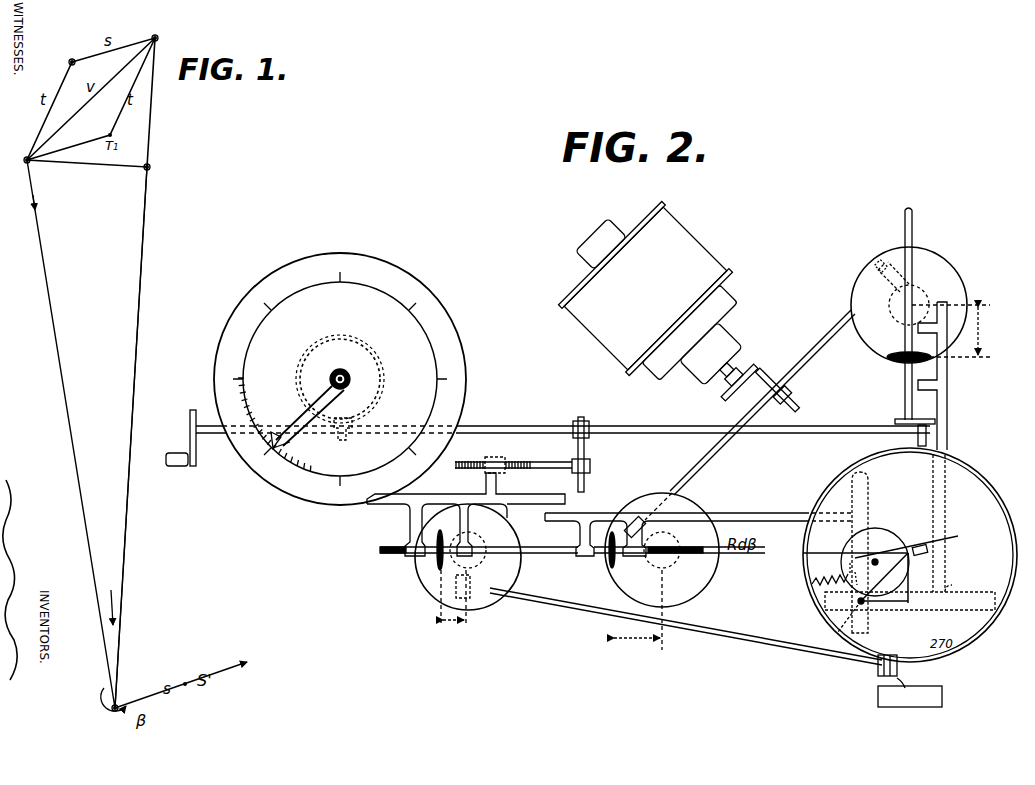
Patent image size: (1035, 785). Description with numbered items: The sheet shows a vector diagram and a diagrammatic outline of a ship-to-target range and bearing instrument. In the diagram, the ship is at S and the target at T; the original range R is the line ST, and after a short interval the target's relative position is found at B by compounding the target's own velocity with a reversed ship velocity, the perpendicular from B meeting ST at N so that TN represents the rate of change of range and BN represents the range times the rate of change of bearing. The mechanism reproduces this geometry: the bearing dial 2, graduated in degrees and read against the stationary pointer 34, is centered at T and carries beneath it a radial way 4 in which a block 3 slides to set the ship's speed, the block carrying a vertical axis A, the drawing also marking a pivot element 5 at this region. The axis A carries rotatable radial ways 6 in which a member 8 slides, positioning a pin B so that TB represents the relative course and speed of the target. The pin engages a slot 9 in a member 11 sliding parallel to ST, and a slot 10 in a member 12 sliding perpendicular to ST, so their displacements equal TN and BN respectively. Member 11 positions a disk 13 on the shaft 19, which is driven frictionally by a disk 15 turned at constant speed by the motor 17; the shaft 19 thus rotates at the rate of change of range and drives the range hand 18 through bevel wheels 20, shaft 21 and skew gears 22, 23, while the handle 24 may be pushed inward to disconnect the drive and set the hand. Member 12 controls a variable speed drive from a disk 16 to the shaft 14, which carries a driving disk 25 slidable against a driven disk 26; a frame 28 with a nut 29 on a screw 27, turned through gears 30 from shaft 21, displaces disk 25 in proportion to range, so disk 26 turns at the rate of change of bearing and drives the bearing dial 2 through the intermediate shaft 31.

In FIG. 2, the bearing dial 2 is at (1012, 568).
In FIG. 2, the sliding block 3 is at (875, 557).
In FIG. 2, the radial way 4 is at (930, 548).
In FIG. 2, the pivot pin 5 is at (878, 558).
In FIG. 2, the radial ways 6 is at (815, 612).
In FIG. 2, the sliding member 8 is at (908, 557).
In FIG. 2, the slot 9 is at (962, 612).
In FIG. 2, the slot 10 is at (868, 490).
In FIG. 2, the sliding member 11 is at (940, 412).
In FIG. 2, the sliding member 12 is at (740, 520).
In FIG. 2, the disk 13 is at (900, 352).
In FIG. 2, the shaft 14 is at (398, 542).
In FIG. 2, the disk 15 is at (955, 280).
In FIG. 2, the disk 16 is at (705, 575).
In FIG. 2, the motor 17 is at (666, 309).
In FIG. 2, the range hand 18 is at (290, 439).
In FIG. 2, the shaft 19 is at (905, 405).
In FIG. 2, the bevel wheels 20 is at (926, 428).
In FIG. 2, the shaft 21 is at (771, 434).
In FIG. 2, the skew gear 22 is at (345, 440).
In FIG. 2, the skew gear 23 is at (382, 381).
In FIG. 2, the handle 24 is at (185, 452).
In FIG. 2, the disk 25 is at (516, 558).
In FIG. 2, the disk 26 is at (512, 575).
In FIG. 2, the screw 27 is at (528, 452).
In FIG. 2, the frame 28 is at (497, 485).
In FIG. 2, the nut 29 is at (494, 457).
In FIG. 2, the gears 30 is at (585, 452).
In FIG. 2, the intermediate shaft 31 is at (730, 630).
In FIG. 2, the stationary pointer 34 is at (900, 680).
In FIG. 1, the vertical axis A is at (65, 56).
In FIG. 2, the vertical axis A is at (855, 542).
In FIG. 1, the pin B is at (17, 160).
In FIG. 2, the pin B is at (861, 615).
In FIG. 1, the target position T is at (155, 28).
In FIG. 2, the target position T is at (893, 563).
In FIG. 1, the foot of perpendicular N is at (154, 167).
In FIG. 2, the foot of perpendicular N is at (892, 615).
In FIG. 1, the ship position S is at (112, 716).
In FIG. 1, the range R is at (134, 437).
In FIG. 2, the range R is at (453, 631).
In FIG. 2, the rate of change of range distance TN is at (956, 331).
In FIG. 2, the perpendicular distance BN is at (637, 649).